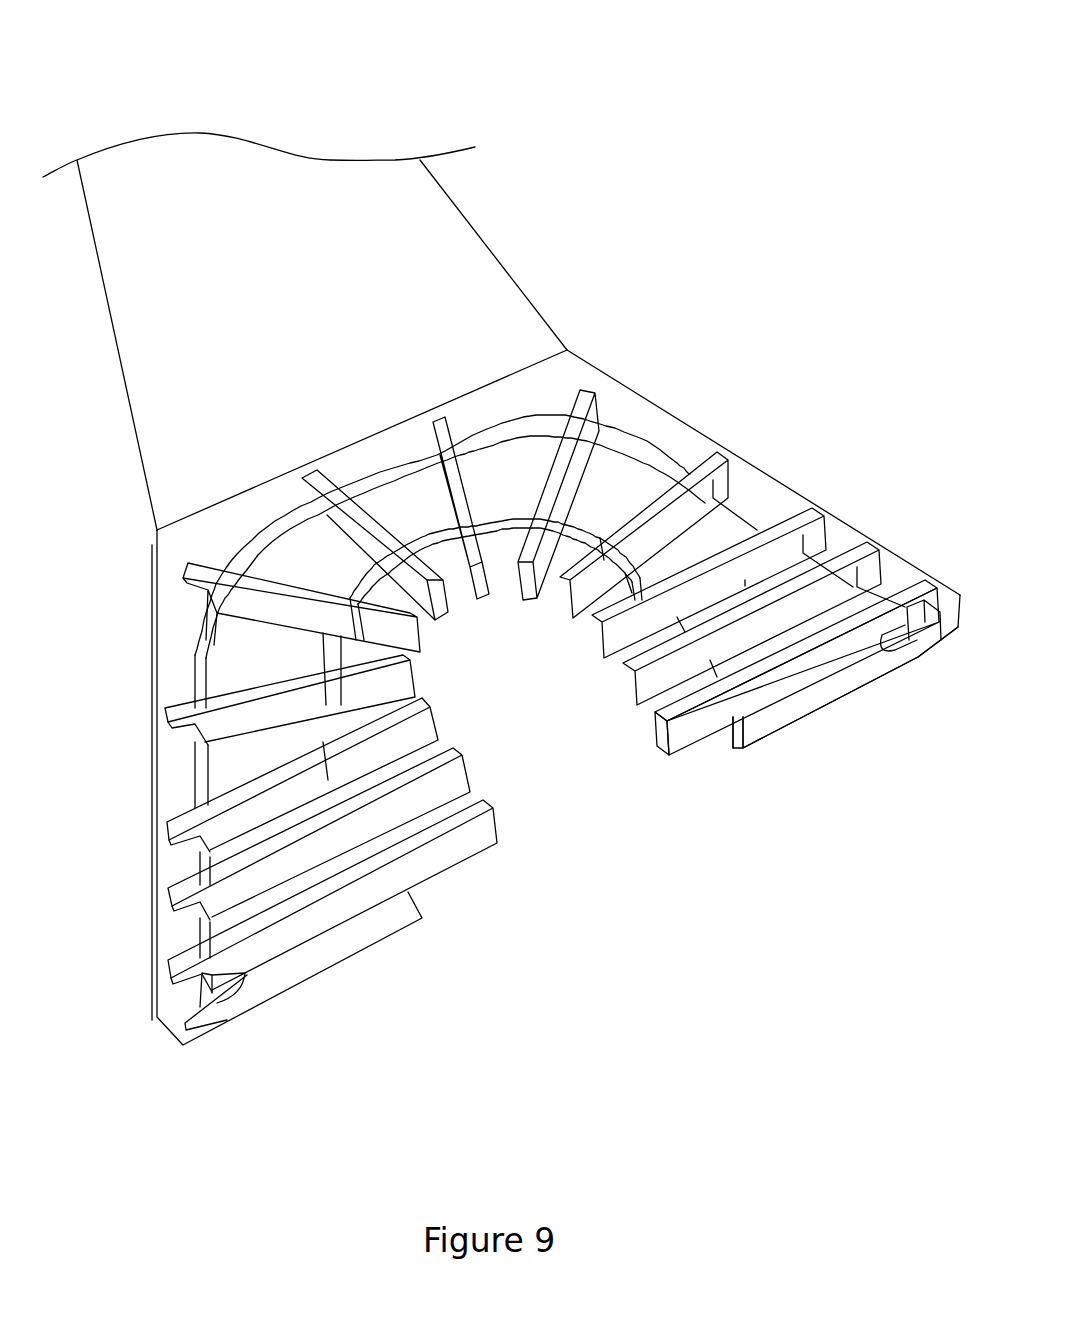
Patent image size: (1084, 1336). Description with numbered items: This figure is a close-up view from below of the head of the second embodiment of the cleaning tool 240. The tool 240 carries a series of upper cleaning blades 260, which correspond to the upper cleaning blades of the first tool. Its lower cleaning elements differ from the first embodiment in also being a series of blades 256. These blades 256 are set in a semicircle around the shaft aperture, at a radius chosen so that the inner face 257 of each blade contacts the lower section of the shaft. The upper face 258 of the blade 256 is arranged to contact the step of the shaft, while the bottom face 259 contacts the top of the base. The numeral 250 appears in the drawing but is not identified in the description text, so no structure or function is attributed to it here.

The cleaning tool 240 is at (757, 103).
The base plate 250 is at (395, 937).
The blades 256 is at (692, 723).
The inner face 257 is at (657, 730).
The upper face 258 is at (687, 745).
The bottom face 259 is at (668, 705).
The upper cleaning blades 260 is at (773, 717).